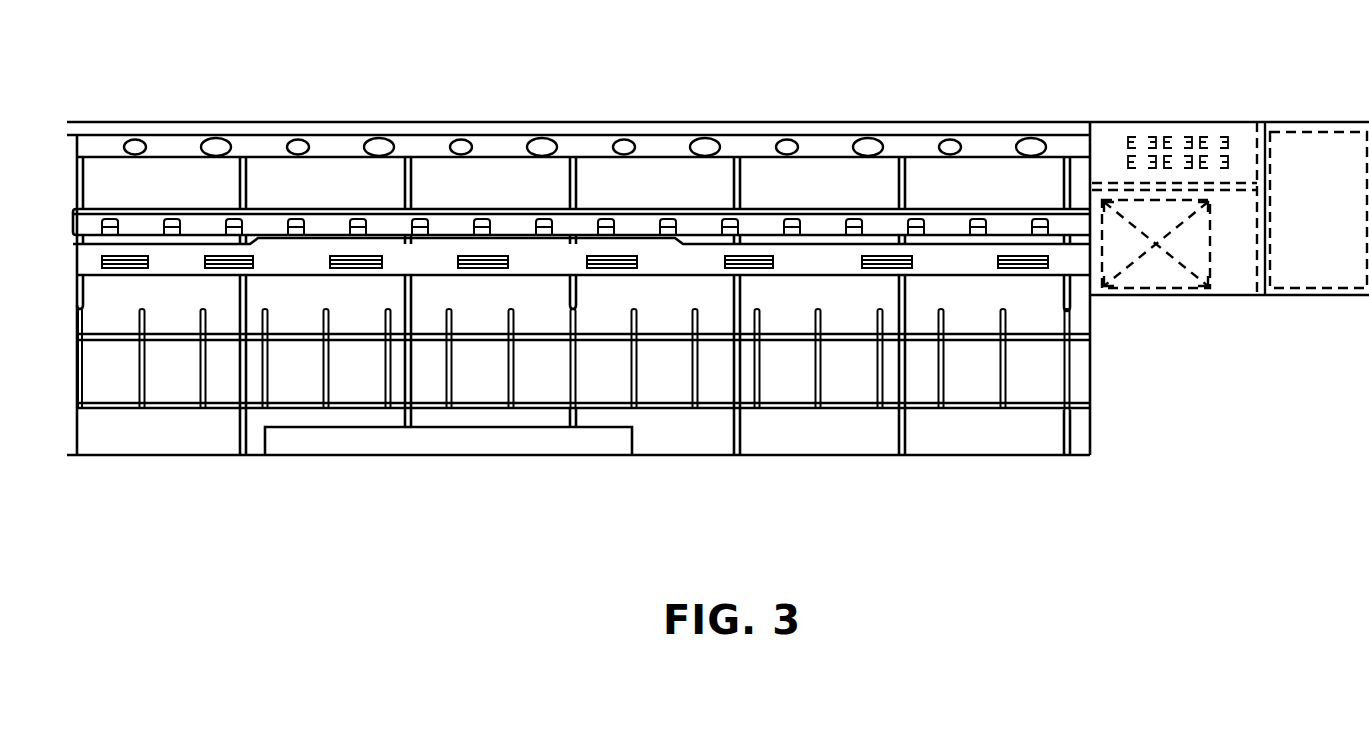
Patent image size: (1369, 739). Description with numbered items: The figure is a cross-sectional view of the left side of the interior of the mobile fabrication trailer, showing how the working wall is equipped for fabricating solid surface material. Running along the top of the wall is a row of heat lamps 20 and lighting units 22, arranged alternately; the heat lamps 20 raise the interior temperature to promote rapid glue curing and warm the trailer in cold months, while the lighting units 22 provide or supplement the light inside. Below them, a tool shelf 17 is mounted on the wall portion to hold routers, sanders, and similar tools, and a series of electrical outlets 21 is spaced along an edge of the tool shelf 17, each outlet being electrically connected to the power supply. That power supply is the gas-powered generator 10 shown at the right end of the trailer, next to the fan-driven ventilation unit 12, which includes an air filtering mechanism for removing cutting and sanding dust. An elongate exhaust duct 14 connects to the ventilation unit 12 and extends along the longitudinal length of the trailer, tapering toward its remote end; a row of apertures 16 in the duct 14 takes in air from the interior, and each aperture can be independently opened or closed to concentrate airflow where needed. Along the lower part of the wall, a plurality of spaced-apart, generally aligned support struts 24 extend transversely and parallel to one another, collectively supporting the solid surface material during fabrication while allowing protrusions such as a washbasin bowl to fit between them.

The gas-powered generator 10 is at (1338, 258).
The ventilation unit 12 is at (1213, 262).
The exhaust duct 14 is at (1078, 260).
The apertures 16 is at (118, 271).
The tool shelf 17 is at (88, 217).
The heat lamps 20 is at (216, 138).
The electrical outlets 21 is at (978, 222).
The lighting units 22 is at (134, 140).
The support struts 24 is at (136, 375).